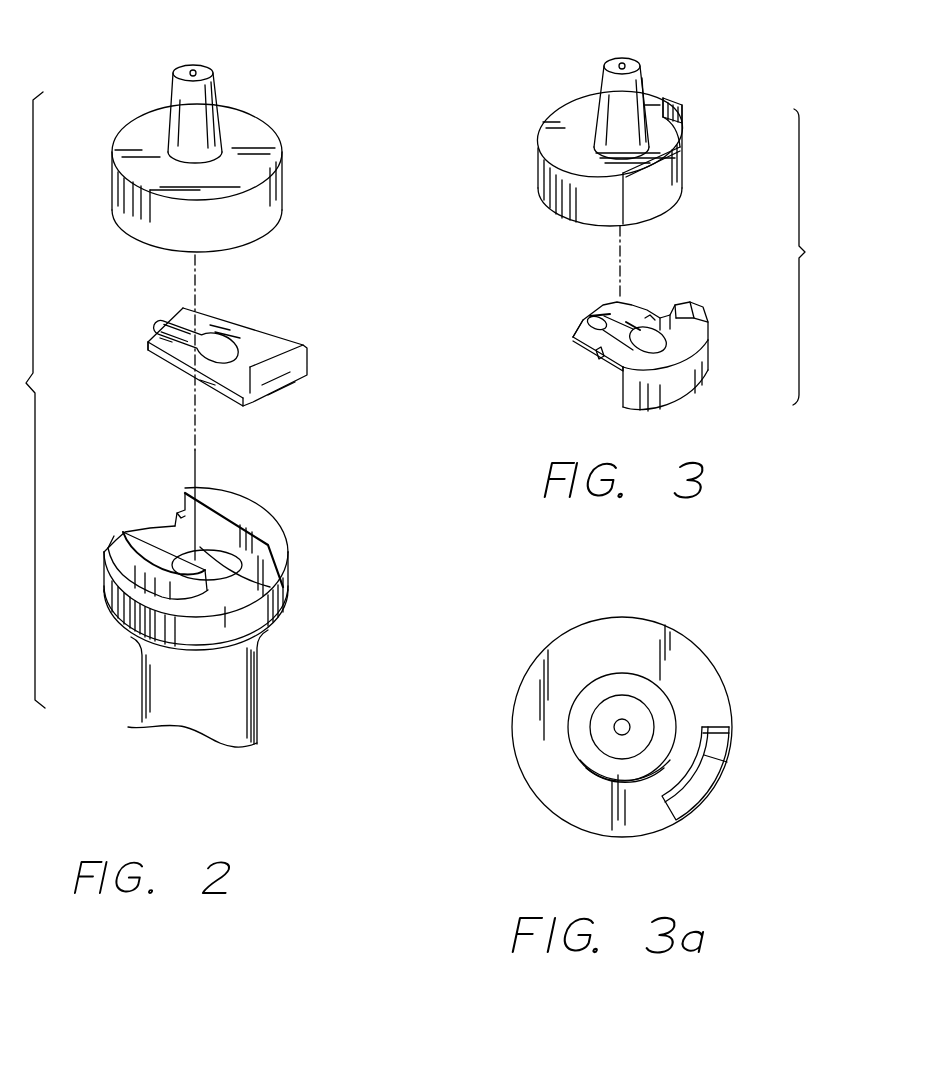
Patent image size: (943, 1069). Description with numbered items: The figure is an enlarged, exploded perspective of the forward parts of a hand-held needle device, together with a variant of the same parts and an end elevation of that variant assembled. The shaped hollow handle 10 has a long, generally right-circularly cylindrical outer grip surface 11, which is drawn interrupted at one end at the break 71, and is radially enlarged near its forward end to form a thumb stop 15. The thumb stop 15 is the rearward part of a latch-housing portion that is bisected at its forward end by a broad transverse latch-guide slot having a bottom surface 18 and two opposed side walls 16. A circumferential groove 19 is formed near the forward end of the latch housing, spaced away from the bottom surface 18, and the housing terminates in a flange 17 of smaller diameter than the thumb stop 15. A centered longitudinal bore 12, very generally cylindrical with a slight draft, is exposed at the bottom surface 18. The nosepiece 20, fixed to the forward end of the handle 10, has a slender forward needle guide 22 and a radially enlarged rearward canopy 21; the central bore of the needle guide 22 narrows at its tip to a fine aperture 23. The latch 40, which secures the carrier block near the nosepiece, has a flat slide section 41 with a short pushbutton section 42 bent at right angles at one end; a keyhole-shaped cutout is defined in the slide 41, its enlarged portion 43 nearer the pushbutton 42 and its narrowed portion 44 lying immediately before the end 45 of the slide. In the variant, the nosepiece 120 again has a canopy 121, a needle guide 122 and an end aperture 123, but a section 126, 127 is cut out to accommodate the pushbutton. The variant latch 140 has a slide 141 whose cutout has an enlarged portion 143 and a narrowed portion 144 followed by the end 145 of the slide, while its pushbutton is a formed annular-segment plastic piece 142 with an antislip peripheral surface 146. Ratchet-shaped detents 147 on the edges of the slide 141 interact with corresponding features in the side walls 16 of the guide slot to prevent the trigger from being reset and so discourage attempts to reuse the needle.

In FIG. 2, the handle 10 is at (226, 608).
In FIG. 2, the outer grip surface 11 is at (205, 691).
In FIG. 2, the longitudinal bore 12 is at (217, 569).
In FIG. 2, the thumb stop 15 is at (183, 633).
In FIG. 2, the side walls 16 is at (213, 536).
In FIG. 2, the flange 17 is at (185, 496).
In FIG. 2, the bottom surface 18 is at (150, 532).
In FIG. 2, the circumferential groove 19 is at (174, 508).
In FIG. 2, the nosepiece 20 is at (251, 133).
In FIG. 2, the canopy 21 is at (283, 173).
In FIG. 2, the needle guide 22 is at (195, 108).
In FIG. 2, the aperture 23 is at (193, 70).
In FIG. 2, the latch 40 is at (232, 336).
In FIG. 2, the slide section 41 is at (257, 347).
In FIG. 2, the pushbutton section 42 is at (282, 372).
In FIG. 2, the enlarged portion 43 is at (227, 336).
In FIG. 2, the narrowed portion 44 is at (177, 323).
In FIG. 2, the end of the slide 45 is at (145, 343).
In FIG. 2, the container wall 71 is at (258, 742).
In FIG. 3, the nosepiece 120 is at (617, 113).
In FIG. 3A, the nosepiece 120 is at (627, 711).
In FIG. 3, the canopy 121 is at (665, 108).
In FIG. 3A, the canopy 121 is at (698, 648).
In FIG. 3, the needle guide 122 is at (606, 100).
In FIG. 3A, the needle guide 122 is at (628, 683).
In FIG. 3, the aperture 123 is at (623, 65).
In FIG. 3, the cut-out section 126 is at (650, 184).
In FIG. 3A, the cut-out section 126 is at (689, 740).
In FIG. 3, the cut-out section 127 is at (683, 125).
In FIG. 3, the latch 140 is at (632, 344).
In FIG. 3A, the latch 140 is at (733, 789).
In FIG. 3, the slide 141 is at (615, 303).
In FIG. 3, the pushbutton 142 is at (697, 319).
In FIG. 3, the enlarged portion 143 is at (654, 343).
In FIG. 3, the narrowed portion 144 is at (573, 338).
In FIG. 3, the end of the slide 145 is at (582, 326).
In FIG. 3, the antislip peripheral surface 146 is at (680, 388).
In FIG. 3A, the antislip peripheral surface 146 is at (715, 773).
In FIG. 3, the ratchet-shaped detents 147 is at (648, 318).